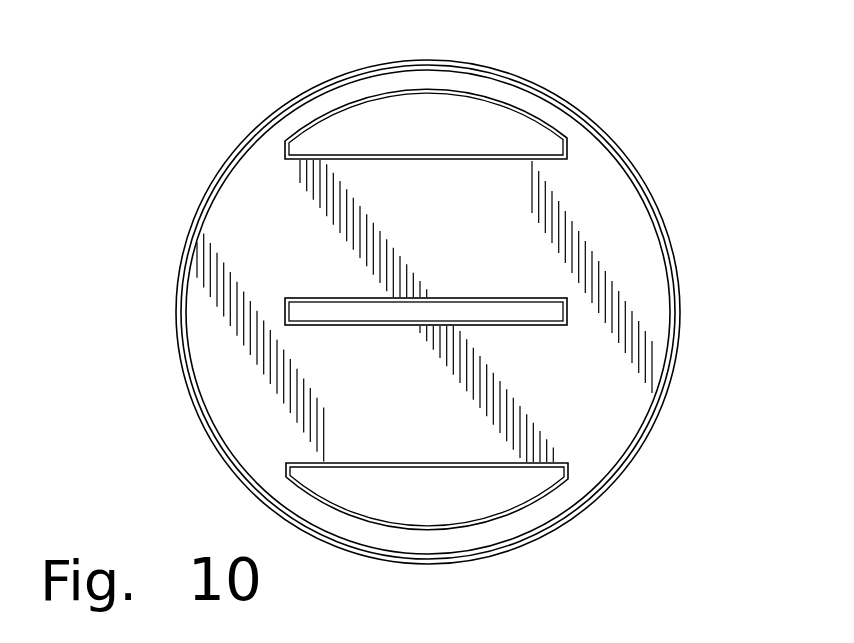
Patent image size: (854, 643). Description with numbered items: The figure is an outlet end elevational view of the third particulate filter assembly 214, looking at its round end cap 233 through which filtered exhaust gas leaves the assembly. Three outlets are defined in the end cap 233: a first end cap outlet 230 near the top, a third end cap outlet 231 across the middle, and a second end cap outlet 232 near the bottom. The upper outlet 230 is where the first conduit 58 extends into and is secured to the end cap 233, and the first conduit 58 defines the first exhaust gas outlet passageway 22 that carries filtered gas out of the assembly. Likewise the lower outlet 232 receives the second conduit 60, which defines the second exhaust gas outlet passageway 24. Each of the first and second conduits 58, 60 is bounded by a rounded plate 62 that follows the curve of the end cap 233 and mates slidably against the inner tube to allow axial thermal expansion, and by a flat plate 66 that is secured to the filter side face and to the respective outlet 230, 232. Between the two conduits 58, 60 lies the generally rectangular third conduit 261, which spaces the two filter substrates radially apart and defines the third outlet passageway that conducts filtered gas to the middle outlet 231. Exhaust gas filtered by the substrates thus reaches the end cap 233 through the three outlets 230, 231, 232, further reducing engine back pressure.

The filter assembly 214 is at (159, 170).
The first exhaust gas outlet passageway 22 is at (401, 97).
The second exhaust gas outlet passageway 24 is at (402, 465).
The first conduit 58 is at (357, 138).
The second conduit 60 is at (357, 484).
The rounded plate 62 is at (437, 96).
The flat plate 66 is at (437, 152).
The end cap outlet 230 is at (493, 100).
The third end cap outlet 231 is at (325, 298).
The end cap outlet 232 is at (487, 466).
The end cap 233 is at (652, 254).
The third conduit 261 is at (515, 300).